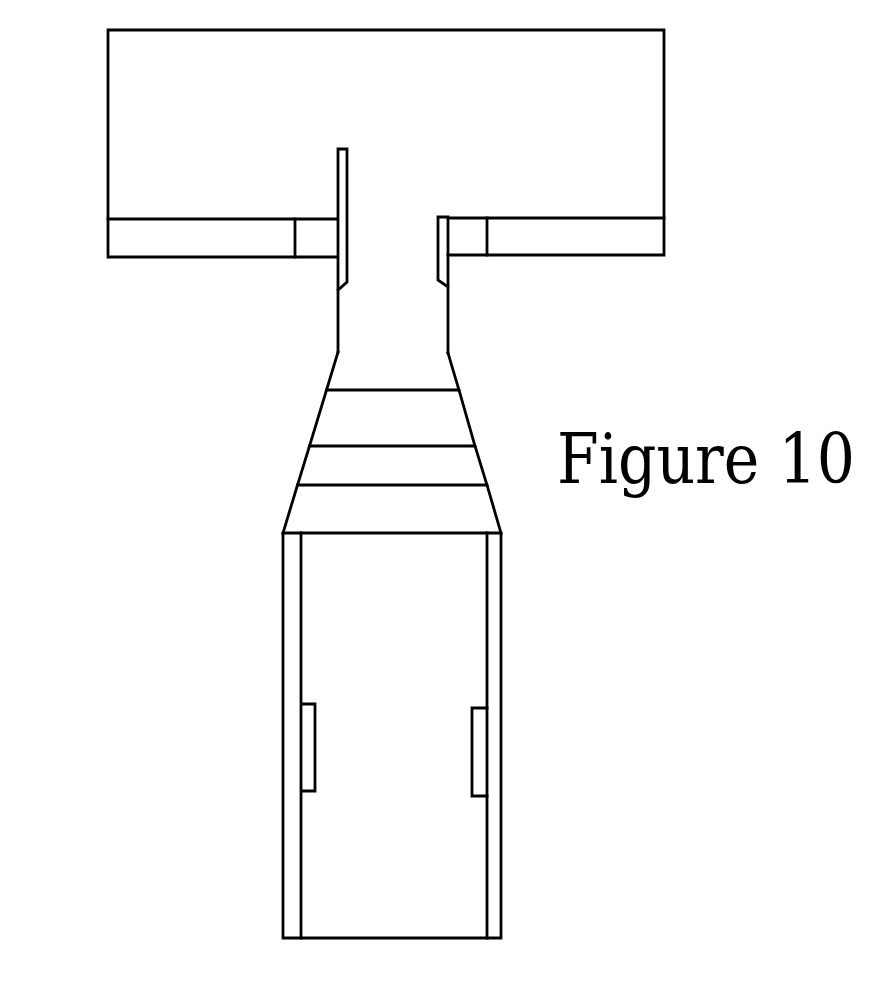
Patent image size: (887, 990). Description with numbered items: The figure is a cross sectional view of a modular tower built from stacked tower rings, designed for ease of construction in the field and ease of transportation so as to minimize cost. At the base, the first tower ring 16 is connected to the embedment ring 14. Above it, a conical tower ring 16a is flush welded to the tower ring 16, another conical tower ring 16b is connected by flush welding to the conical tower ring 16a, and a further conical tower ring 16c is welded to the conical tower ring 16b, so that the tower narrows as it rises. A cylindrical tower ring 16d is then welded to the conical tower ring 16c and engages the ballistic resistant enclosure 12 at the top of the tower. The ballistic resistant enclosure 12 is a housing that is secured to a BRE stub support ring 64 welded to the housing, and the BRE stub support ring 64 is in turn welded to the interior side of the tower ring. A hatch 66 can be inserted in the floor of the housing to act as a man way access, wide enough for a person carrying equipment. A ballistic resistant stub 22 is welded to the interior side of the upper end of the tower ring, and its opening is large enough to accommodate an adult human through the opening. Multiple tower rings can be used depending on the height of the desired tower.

The ballistic resistant enclosure 12 is at (664, 94).
The BRE stub support ring 64 is at (315, 242).
The hatch 66 is at (338, 155).
The ballistic resistant stub 22 is at (448, 272).
The cylindrical tower ring 16d is at (322, 369).
The conical tower ring 16c is at (312, 417).
The conical tower ring 16b is at (302, 465).
The conical tower ring 16a is at (292, 513).
The tower ring 16 is at (503, 623).
The embedment ring 14 is at (495, 735).